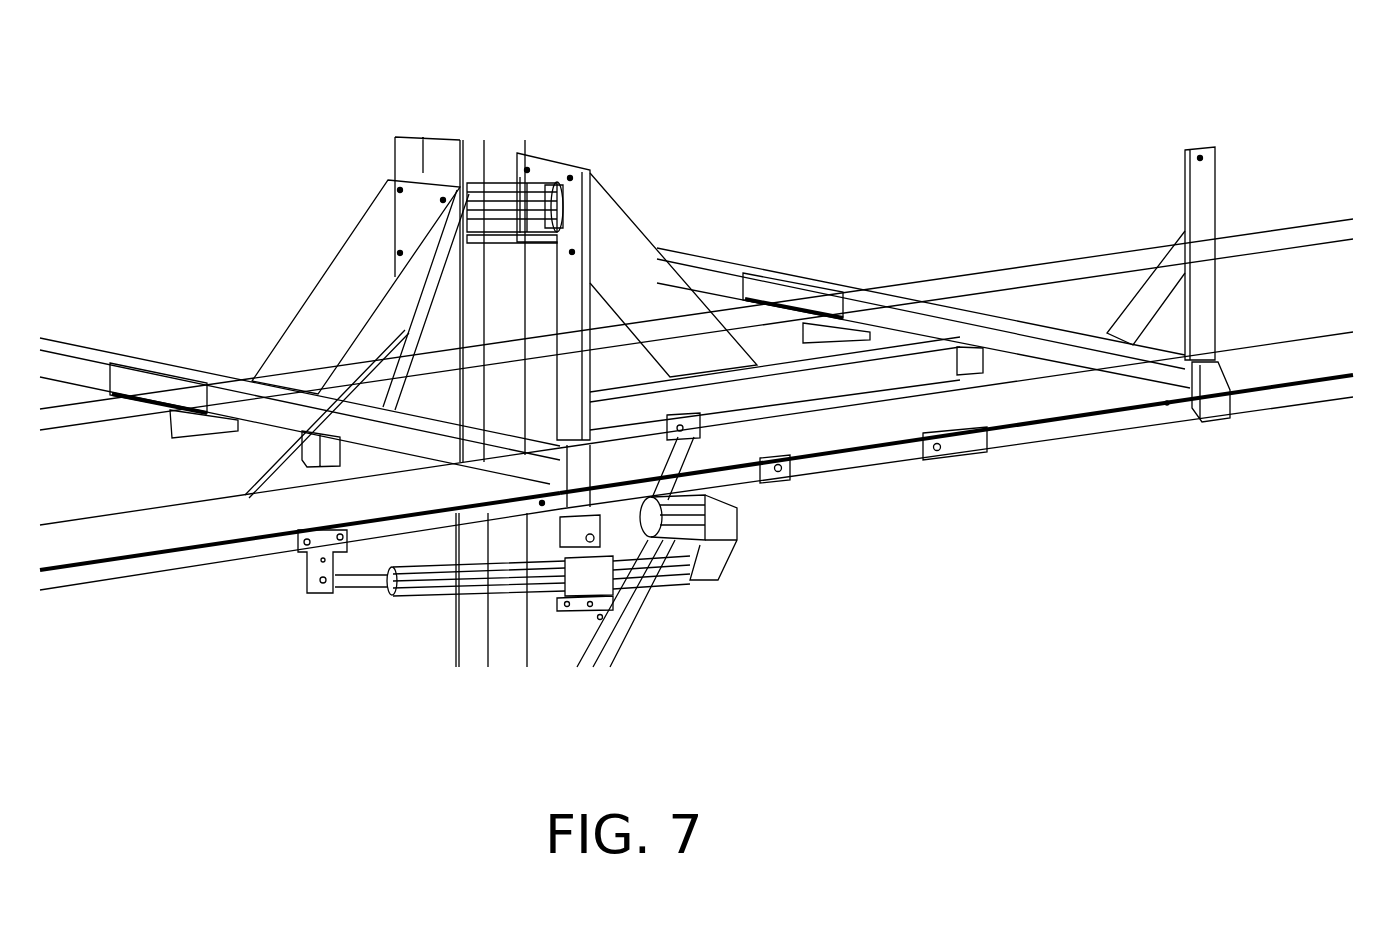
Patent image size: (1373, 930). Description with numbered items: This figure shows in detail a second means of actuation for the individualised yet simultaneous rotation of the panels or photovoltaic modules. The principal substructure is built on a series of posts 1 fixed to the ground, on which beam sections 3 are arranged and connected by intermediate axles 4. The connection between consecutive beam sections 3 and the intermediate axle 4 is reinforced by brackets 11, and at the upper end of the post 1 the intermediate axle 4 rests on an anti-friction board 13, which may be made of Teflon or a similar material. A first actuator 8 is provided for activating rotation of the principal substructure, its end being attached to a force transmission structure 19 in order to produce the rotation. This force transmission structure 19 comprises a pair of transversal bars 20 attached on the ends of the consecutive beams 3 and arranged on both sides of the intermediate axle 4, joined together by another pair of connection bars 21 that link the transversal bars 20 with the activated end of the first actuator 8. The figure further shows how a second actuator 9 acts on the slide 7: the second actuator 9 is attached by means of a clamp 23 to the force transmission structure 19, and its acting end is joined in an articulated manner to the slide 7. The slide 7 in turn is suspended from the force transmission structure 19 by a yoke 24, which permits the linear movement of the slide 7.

The post 1 is at (472, 638).
The beam section 3 is at (95, 480).
The intermediate axle 4 is at (498, 185).
The slide 7 is at (1057, 430).
The first actuator 8 is at (623, 638).
The second actuator 9 is at (362, 637).
The bracket 11 is at (617, 240).
The anti-friction board 13 is at (555, 195).
The force transmission structure 19 is at (758, 230).
The transversal bar 20 is at (75, 363).
The connection bar 21 is at (783, 387).
The clamp 23 is at (580, 607).
The yoke 24 is at (707, 513).